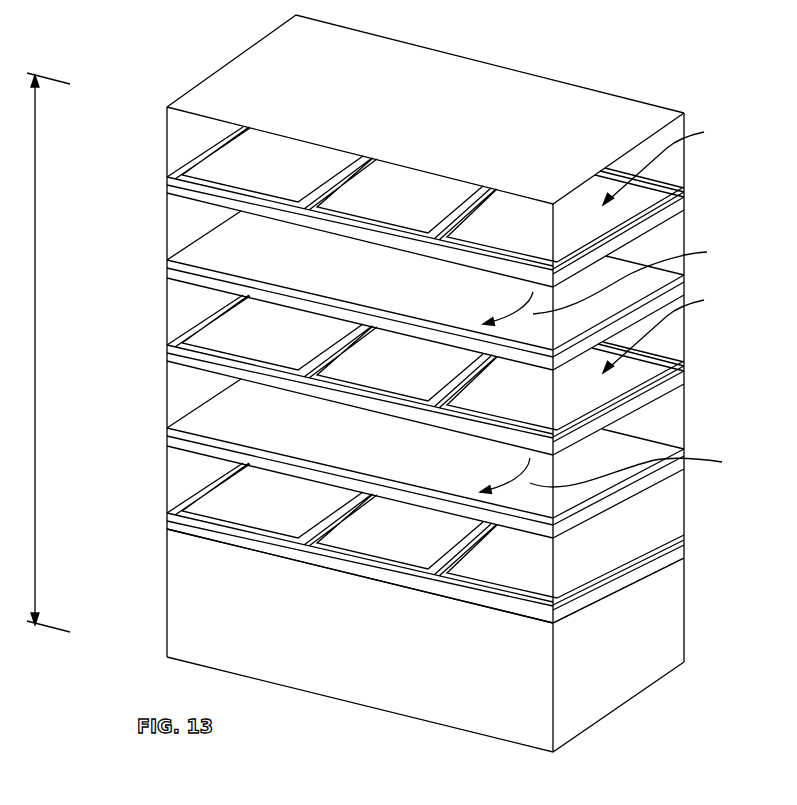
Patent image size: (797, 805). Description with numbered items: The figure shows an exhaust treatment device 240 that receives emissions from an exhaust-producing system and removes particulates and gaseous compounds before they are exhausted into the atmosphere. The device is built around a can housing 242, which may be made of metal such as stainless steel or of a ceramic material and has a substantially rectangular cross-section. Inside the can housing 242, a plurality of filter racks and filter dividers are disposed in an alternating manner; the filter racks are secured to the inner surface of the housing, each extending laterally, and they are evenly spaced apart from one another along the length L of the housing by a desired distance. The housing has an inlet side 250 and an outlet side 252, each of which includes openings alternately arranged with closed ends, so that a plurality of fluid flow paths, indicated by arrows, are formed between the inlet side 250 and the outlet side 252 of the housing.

The exhaust treatment device 240 is at (172, 34).
The inlet side 250 is at (288, 14).
The outlet side 252 is at (157, 106).
The can housing 242 is at (628, 698).
The length L is at (48, 352).